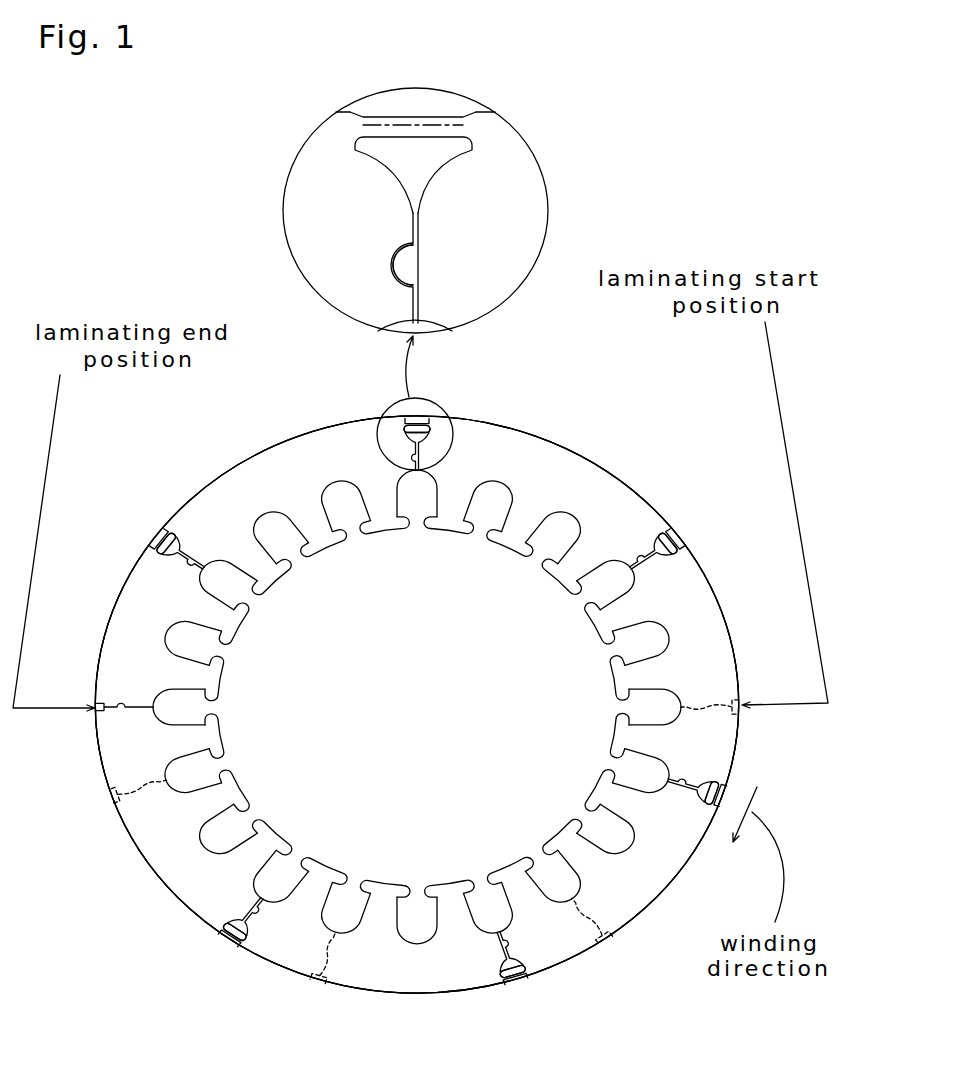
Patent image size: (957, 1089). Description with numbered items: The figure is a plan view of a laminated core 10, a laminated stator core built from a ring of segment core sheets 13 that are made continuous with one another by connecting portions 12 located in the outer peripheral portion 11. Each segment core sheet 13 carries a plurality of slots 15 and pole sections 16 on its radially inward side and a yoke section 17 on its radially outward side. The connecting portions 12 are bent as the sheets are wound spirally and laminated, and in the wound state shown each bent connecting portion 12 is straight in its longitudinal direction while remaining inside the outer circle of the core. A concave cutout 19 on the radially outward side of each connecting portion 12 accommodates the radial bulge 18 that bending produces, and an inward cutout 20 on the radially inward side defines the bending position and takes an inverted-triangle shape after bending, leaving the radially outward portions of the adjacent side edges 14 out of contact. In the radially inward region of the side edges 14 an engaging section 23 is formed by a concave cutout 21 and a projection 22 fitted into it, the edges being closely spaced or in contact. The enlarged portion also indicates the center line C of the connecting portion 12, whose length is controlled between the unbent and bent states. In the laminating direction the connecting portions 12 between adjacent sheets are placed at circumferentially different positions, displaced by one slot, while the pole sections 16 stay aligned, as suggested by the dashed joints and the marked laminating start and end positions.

The laminated core 10 is at (630, 397).
The outer peripheral portion 11 is at (541, 431).
The connecting portion 12 is at (450, 112).
The segment core sheet 13 is at (265, 462).
The side edge 14 is at (399, 227).
The slot 15 is at (237, 587).
The pole section 16 is at (249, 622).
The yoke section 17 is at (300, 452).
The radial bulge 18 is at (413, 111).
The concave cutout 19 is at (381, 106).
The inward cutout 20 is at (425, 152).
The concave cutout 21 is at (417, 257).
The projection 22 is at (407, 258).
The engaging section 23 is at (361, 266).
The center line C is at (432, 124).